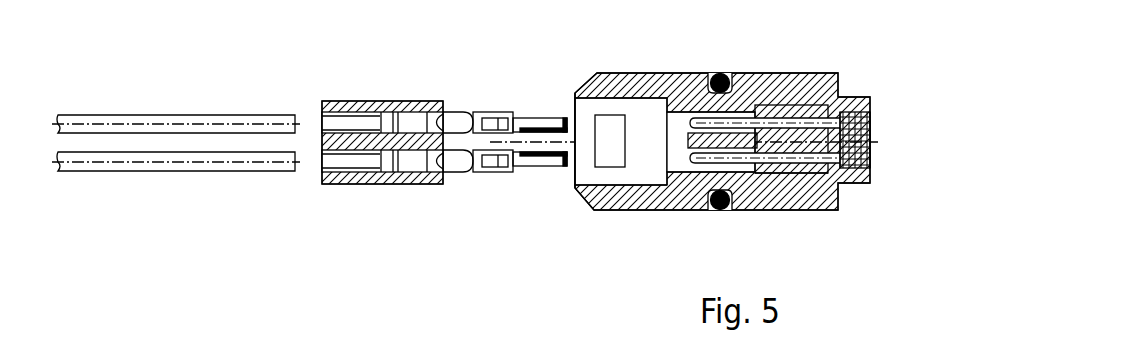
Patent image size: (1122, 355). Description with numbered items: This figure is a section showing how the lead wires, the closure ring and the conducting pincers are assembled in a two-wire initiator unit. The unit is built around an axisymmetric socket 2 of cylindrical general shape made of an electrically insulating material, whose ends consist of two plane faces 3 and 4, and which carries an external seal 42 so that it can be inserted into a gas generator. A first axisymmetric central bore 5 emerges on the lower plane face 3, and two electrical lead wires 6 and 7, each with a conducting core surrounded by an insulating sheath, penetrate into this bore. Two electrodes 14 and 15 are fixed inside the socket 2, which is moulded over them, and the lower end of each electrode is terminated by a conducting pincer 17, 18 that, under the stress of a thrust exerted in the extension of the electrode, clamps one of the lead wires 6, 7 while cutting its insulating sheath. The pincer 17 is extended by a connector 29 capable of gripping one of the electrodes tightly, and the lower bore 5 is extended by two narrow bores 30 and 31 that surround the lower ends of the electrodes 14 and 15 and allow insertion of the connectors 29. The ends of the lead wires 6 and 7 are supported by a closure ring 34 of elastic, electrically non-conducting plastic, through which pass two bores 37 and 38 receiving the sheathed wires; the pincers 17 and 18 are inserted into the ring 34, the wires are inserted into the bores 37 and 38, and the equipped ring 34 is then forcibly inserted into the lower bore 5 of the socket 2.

The socket 2 is at (645, 88).
The plane face 3 is at (575, 190).
The plane face 4 is at (870, 102).
The central bore 5 is at (650, 120).
The electrical lead wire 6 is at (127, 125).
The electrical lead wire 7 is at (120, 164).
The electrode 14 is at (800, 110).
The electrode 15 is at (793, 165).
The conducting pincer 17 is at (480, 165).
The conducting pincer 18 is at (480, 118).
The connector 29 is at (537, 127).
The narrow bore 30 is at (735, 117).
The narrow bore 31 is at (737, 167).
The closure ring 34 is at (358, 100).
The bore 37 is at (357, 160).
The bore 38 is at (340, 128).
The external seal 42 is at (708, 212).